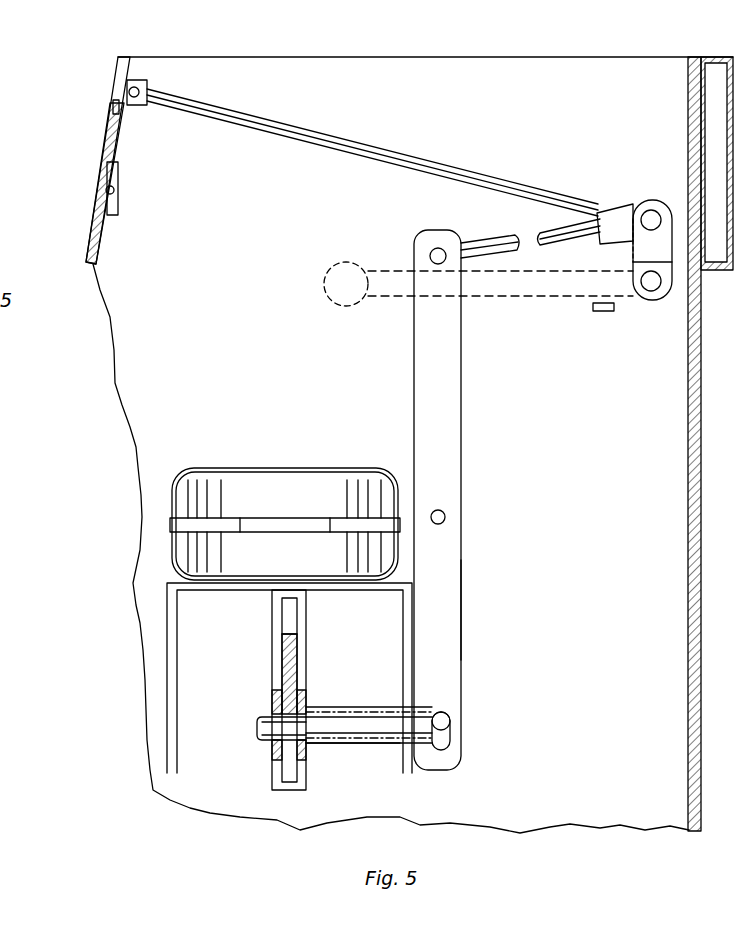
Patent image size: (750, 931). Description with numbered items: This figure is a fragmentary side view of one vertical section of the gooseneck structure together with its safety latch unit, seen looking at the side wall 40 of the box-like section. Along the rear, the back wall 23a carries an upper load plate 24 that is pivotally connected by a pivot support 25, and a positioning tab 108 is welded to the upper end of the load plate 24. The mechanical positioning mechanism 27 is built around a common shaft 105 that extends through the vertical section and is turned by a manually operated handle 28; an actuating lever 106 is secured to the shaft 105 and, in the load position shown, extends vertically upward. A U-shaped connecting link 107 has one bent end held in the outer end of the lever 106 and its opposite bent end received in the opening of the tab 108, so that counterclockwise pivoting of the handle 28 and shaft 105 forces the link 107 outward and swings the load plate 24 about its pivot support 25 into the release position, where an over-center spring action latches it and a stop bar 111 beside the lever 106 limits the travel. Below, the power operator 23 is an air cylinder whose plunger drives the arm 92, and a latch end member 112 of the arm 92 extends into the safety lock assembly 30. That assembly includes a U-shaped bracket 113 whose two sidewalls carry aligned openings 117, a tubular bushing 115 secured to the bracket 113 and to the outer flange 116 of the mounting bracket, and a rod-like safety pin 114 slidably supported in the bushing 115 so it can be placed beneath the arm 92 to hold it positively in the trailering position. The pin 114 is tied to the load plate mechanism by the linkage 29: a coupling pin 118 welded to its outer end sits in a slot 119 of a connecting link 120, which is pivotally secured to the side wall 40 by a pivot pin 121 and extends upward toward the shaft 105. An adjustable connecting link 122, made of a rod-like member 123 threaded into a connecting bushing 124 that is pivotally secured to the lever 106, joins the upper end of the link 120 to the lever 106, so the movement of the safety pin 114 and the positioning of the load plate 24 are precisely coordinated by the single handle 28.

The power operator 23 is at (332, 470).
The back wall 23a is at (100, 257).
The load plate 24 is at (103, 108).
The pivot support 25 is at (118, 184).
The mechanical positioning mechanism 27 is at (661, 302).
The handle 28 is at (516, 298).
The linkage 29 is at (463, 452).
The safety lock assembly 30 is at (347, 706).
The side wall 40 is at (645, 530).
The arm 92 is at (276, 681).
The shaft 105 is at (648, 300).
The actuating lever 106 is at (633, 257).
The connecting link 107 is at (414, 160).
The positioning tab 108 is at (141, 88).
The stop bar 111 is at (597, 312).
The latch end member 112 is at (289, 651).
The bracket 113 is at (302, 641).
The safety pin 114 is at (258, 733).
The tubular bushing 115 is at (356, 746).
The outer flange 116 is at (408, 774).
The openings 117 is at (300, 742).
The coupling pin 118 is at (448, 716).
The slot 119 is at (452, 746).
The connecting link 120 is at (462, 612).
The pivot pin 121 is at (446, 517).
The connecting link 122 is at (557, 230).
The rod-like member 123 is at (482, 240).
The connecting bushing 124 is at (622, 212).